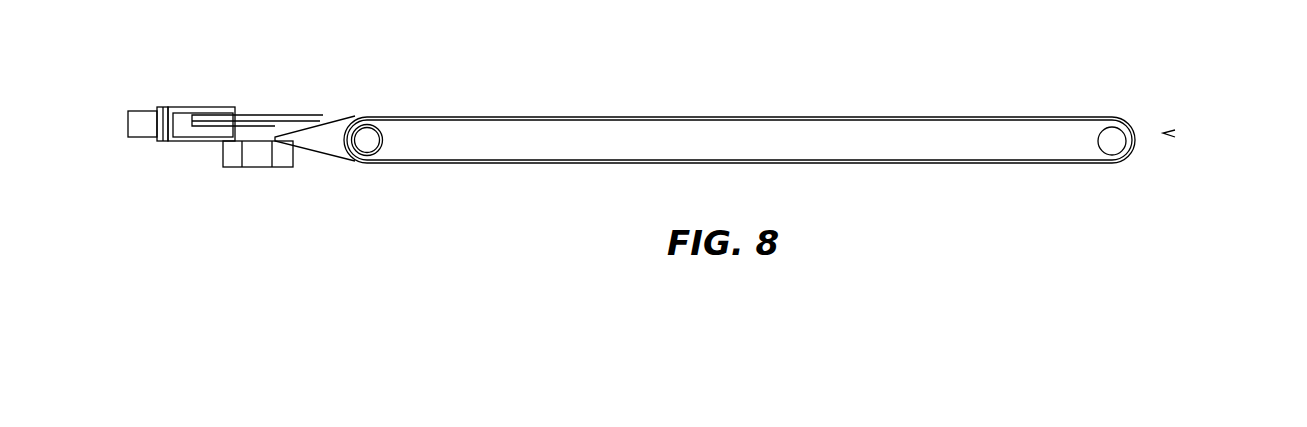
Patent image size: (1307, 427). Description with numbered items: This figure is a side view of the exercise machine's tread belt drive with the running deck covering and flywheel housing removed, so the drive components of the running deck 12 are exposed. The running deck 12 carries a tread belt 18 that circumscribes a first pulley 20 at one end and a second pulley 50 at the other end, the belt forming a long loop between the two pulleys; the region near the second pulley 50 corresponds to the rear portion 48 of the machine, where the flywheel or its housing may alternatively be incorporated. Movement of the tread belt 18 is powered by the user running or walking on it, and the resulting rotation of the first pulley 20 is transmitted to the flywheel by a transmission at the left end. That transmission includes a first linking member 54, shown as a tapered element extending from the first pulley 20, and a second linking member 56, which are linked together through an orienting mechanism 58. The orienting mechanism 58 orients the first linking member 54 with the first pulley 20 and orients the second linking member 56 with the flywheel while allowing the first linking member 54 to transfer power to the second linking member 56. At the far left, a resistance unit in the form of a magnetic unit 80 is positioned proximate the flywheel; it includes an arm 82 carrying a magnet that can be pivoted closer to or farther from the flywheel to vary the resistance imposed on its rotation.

The running deck 12 is at (827, 103).
The tread belt 18 is at (698, 114).
The first pulley 20 is at (371, 142).
The rear portion 48 is at (1165, 133).
The second pulley 50 is at (1116, 143).
The first linking member 54 is at (335, 158).
The second linking member 56 is at (190, 122).
The orienting mechanism 58 is at (253, 155).
The magnetic unit 80 is at (143, 115).
The arm 82 is at (218, 107).